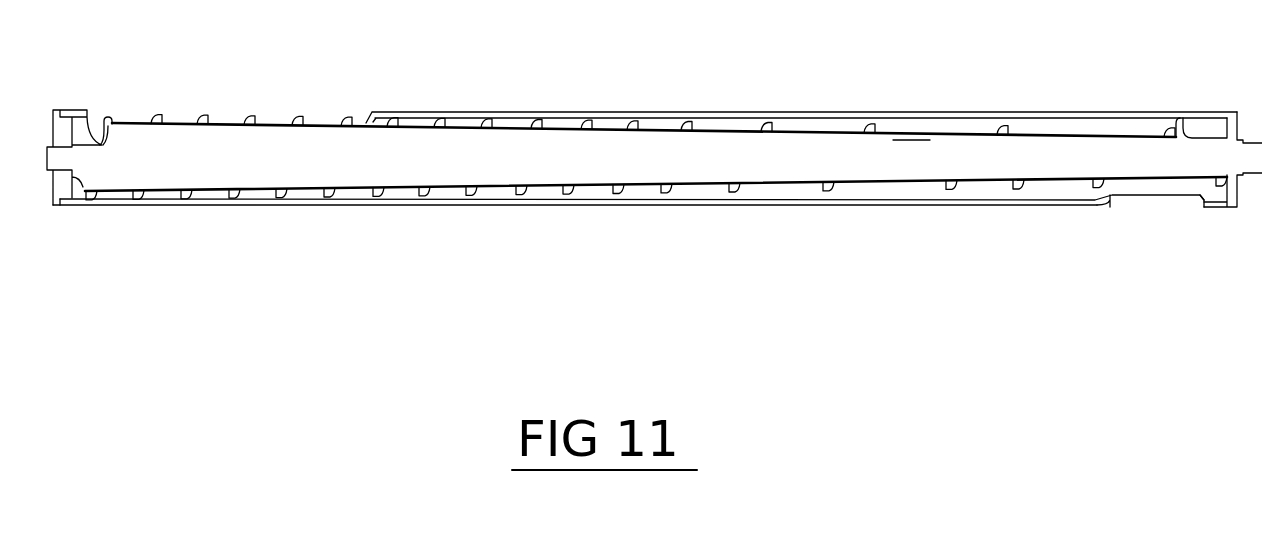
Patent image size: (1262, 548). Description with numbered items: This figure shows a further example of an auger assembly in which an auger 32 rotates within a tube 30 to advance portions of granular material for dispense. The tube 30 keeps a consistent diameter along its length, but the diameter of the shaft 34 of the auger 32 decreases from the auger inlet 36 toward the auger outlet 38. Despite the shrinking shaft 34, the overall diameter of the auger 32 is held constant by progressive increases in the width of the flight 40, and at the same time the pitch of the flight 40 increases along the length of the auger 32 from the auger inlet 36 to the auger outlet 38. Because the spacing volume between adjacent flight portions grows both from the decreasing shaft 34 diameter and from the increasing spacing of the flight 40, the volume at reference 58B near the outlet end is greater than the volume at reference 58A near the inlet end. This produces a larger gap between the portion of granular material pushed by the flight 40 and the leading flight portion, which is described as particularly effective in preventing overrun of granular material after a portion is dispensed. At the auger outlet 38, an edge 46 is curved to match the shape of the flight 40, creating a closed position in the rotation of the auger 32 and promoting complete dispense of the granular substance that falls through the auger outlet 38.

The tube 30 is at (724, 111).
The auger 32 is at (960, 127).
The shaft 34 is at (267, 162).
The auger inlet 36 is at (268, 90).
The auger outlet 38 is at (1153, 232).
The flight 40 is at (483, 193).
The edge 46 is at (1107, 208).
The volume 58A is at (152, 208).
The volume 58B is at (1021, 204).